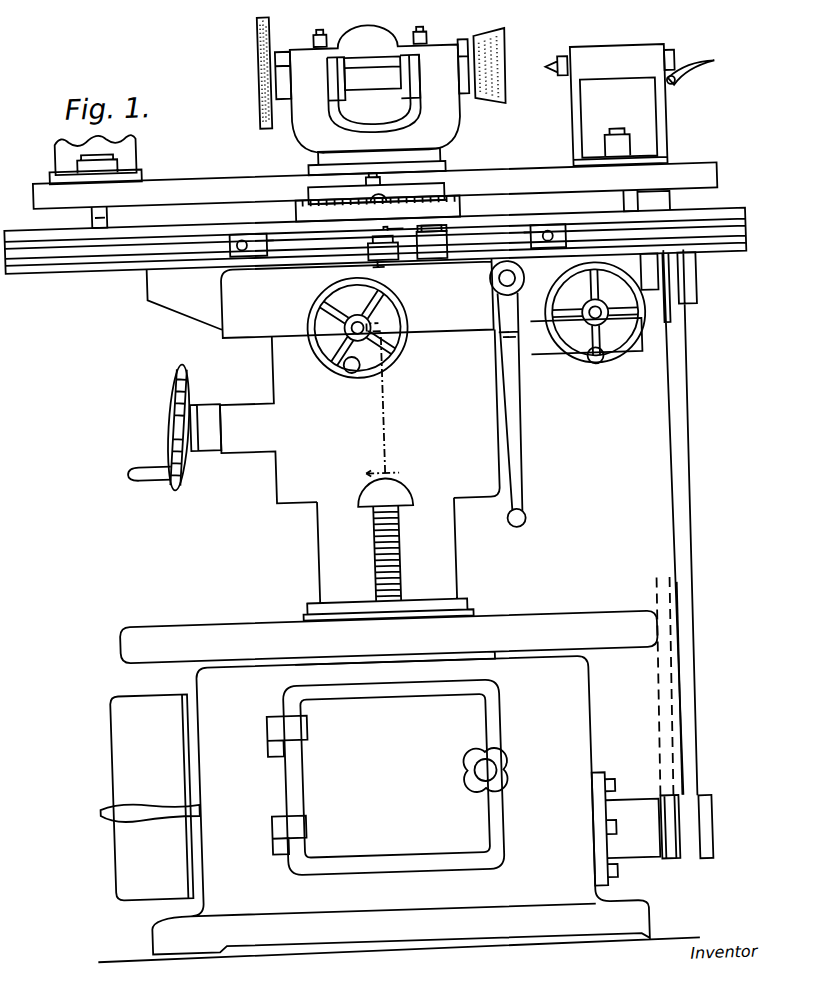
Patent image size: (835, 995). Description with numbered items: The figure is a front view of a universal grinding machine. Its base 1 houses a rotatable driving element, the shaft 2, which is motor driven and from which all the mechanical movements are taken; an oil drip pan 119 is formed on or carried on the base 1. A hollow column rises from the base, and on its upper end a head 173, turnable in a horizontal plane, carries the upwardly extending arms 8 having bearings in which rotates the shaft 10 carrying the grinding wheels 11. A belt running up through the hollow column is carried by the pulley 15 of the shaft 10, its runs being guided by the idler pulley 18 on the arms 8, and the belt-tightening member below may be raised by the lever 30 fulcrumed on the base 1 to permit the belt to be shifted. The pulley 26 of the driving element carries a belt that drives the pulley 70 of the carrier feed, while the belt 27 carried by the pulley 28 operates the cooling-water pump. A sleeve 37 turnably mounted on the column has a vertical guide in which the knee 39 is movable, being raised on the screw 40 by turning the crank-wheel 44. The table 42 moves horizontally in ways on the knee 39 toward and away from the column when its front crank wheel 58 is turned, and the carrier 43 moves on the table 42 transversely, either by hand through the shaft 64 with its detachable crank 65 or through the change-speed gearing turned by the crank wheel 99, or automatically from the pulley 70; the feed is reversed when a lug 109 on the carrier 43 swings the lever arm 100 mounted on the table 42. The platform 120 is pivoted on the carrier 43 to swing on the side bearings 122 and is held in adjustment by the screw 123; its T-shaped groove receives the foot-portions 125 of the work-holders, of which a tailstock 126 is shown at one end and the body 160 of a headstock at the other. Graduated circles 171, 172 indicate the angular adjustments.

The base 1 is at (546, 721).
The shaft 2 is at (644, 877).
The arms 8 is at (372, 79).
The shaft 10 is at (357, 103).
The grinding wheels 11 is at (298, 148).
The pulley 15 is at (372, 73).
The idler pulley 18 is at (406, 351).
The pulley 26 is at (712, 787).
The belt 27 is at (653, 711).
The pulley 28 is at (667, 868).
The lever 30 is at (170, 804).
The sleeve 37 is at (387, 558).
The knee 39 is at (359, 417).
The screw 40 is at (366, 560).
The table 42 is at (320, 300).
The carrier 43 is at (375, 235).
The crank-wheel 44 is at (172, 414).
The crank wheel 58 is at (395, 347).
The shaft 64 is at (508, 298).
The crank 65 is at (518, 433).
The pulley 70 is at (695, 309).
The crank wheel 99 is at (591, 358).
The lever arm 100 is at (462, 231).
The lug 109 is at (397, 246).
The oil drip pan 119 is at (580, 636).
The platform 120 is at (250, 180).
The side bearings 122 is at (117, 217).
The screw 123 is at (440, 155).
The foot-portions 125 is at (698, 692).
The tailstock 126 is at (588, 84).
The body 160 is at (146, 150).
The graduated circle 171 is at (200, 514).
The graduated circle 172 is at (455, 196).
The head 173 is at (490, 154).